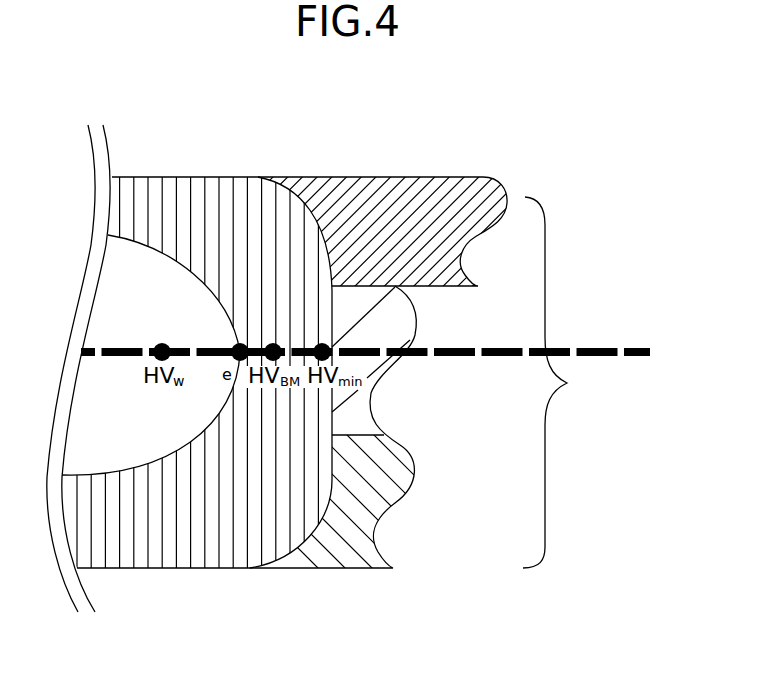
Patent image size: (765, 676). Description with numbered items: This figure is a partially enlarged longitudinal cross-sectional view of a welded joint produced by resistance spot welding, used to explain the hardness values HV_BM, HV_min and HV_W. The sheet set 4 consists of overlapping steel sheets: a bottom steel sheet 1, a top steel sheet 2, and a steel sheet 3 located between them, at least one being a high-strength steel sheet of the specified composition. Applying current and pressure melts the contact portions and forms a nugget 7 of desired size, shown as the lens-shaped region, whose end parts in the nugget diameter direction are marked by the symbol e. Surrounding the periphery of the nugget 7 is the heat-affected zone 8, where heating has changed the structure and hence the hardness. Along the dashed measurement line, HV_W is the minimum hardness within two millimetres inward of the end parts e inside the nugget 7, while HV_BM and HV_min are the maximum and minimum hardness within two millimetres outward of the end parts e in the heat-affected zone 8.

The bottom steel sheet 1 is at (392, 506).
The top steel sheet 2 is at (470, 261).
The steel sheet located between the top and bottom steel sheets 3 is at (375, 389).
The sheet set 4 is at (557, 382).
The nugget 7 is at (158, 278).
The heat-affected zone 8 is at (183, 553).